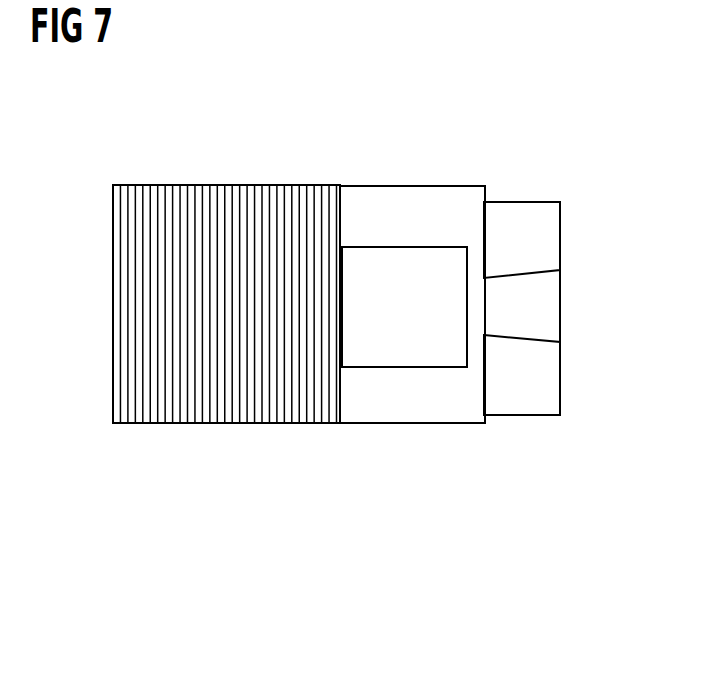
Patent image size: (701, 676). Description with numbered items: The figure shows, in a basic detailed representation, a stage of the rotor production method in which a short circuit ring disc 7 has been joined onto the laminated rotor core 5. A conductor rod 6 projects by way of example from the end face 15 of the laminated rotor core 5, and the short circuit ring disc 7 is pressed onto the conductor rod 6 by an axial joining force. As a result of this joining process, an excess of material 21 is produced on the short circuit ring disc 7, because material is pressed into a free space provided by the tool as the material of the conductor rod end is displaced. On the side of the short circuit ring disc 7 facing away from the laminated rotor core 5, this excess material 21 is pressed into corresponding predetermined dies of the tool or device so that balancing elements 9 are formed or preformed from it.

The laminated rotor core 5 is at (218, 184).
The conductor rod 6 is at (397, 247).
The short circuit ring disc 7 is at (460, 186).
The balancing element 9 is at (520, 202).
The end face 15 is at (341, 400).
The excess material 21 is at (561, 303).